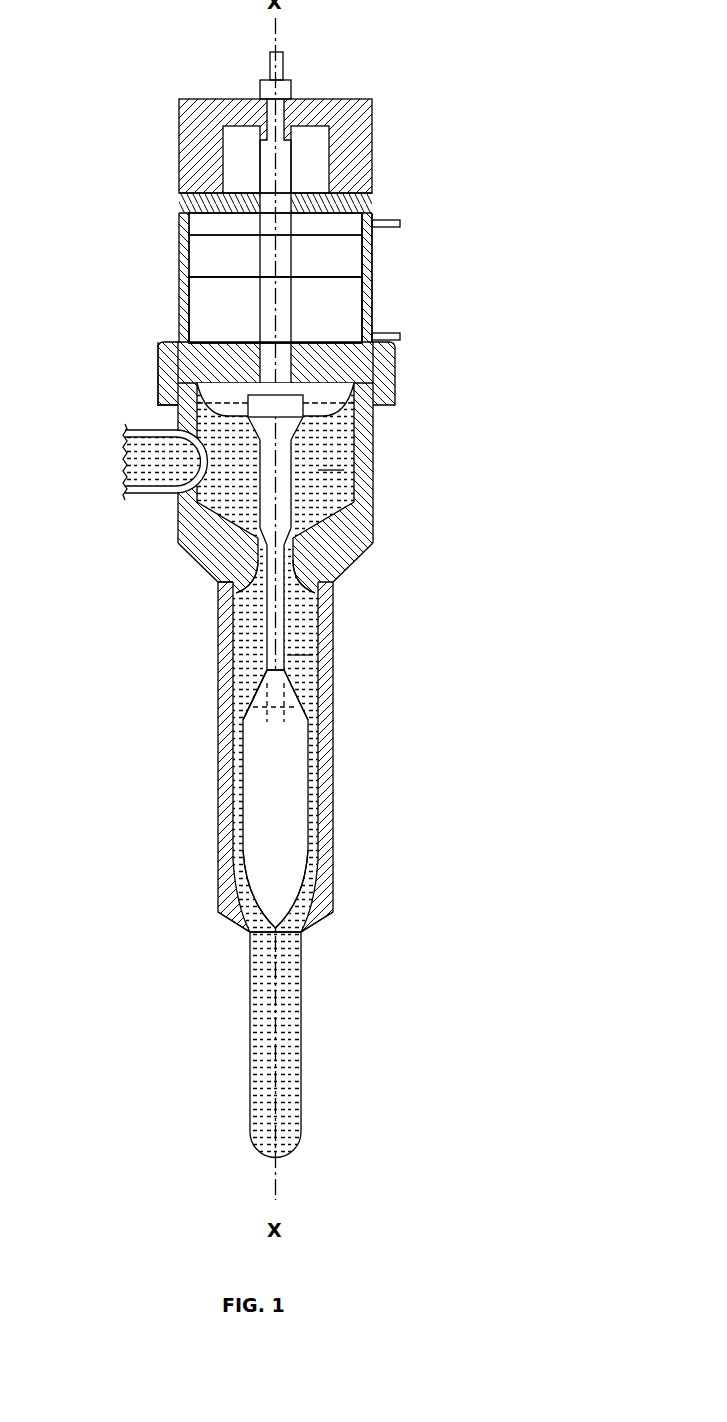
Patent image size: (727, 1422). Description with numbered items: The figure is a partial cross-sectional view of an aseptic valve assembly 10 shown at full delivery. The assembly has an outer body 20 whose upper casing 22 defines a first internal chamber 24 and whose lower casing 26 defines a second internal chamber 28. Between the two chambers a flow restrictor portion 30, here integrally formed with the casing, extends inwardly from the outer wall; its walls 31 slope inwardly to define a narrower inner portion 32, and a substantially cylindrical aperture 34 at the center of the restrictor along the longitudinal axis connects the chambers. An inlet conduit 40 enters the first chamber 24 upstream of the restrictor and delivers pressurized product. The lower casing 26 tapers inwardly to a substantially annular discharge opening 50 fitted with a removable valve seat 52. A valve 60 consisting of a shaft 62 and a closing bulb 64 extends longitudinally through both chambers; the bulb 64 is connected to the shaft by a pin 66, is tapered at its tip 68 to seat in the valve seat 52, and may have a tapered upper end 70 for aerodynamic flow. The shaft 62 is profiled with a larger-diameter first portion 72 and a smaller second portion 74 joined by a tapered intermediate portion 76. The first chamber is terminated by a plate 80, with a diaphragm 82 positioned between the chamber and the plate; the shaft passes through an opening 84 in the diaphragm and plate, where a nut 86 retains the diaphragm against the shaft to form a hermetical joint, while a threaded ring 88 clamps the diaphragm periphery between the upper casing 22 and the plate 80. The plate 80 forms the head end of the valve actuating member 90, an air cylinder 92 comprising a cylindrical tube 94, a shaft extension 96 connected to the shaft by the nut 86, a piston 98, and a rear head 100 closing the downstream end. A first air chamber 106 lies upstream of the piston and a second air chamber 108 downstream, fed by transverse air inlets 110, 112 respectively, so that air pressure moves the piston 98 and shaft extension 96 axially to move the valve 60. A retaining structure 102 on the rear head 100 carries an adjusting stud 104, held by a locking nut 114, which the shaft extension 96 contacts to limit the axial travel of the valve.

The valve assembly 10 is at (524, 72).
The outer casing or body 20 is at (320, 746).
The upper casing 22 is at (362, 503).
The first internal chamber 24 is at (275, 460).
The lower casing 26 is at (218, 826).
The second internal chamber 28 is at (275, 738).
The flow restrictor portion 30 is at (315, 562).
The flow restrictor wall 31 is at (179, 515).
The inner portion 32 is at (216, 588).
The aperture 34 is at (289, 580).
The inlet conduit 40 is at (139, 462).
The discharge opening 50 is at (288, 938).
The valve seat 52 is at (250, 933).
The valve 60 is at (260, 661).
The shaft or stem 62 is at (283, 612).
The closing plug or bulb 64 is at (295, 801).
The pin 66 is at (300, 706).
The tip 68 is at (281, 903).
The upper end of the bulb 70 is at (250, 703).
The first portion 72 is at (262, 508).
The second portion 74 is at (264, 667).
The tapered intermediate portion 76 is at (216, 578).
The plate or wall 80 is at (393, 372).
The seal or diaphragm 82 is at (346, 413).
The opening 84 is at (178, 343).
The nut 86 is at (373, 326).
The threaded ring 88 is at (160, 376).
The valve actuating member 90 is at (376, 258).
The air cylinder 92 is at (210, 247).
The cylindrical tube 94 is at (210, 296).
The shaft extension 96 is at (264, 171).
The piston 98 is at (180, 210).
The rear head 100 is at (183, 180).
The retaining structure 102 is at (186, 137).
The adjusting stud 104 is at (284, 128).
The first air chamber 106 is at (340, 223).
The second air chamber 108 is at (338, 318).
The air inlet 110 is at (400, 223).
The air inlet 112 is at (400, 336).
The locking nut 114 is at (284, 90).